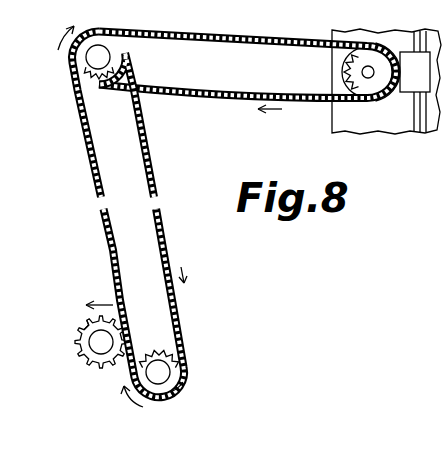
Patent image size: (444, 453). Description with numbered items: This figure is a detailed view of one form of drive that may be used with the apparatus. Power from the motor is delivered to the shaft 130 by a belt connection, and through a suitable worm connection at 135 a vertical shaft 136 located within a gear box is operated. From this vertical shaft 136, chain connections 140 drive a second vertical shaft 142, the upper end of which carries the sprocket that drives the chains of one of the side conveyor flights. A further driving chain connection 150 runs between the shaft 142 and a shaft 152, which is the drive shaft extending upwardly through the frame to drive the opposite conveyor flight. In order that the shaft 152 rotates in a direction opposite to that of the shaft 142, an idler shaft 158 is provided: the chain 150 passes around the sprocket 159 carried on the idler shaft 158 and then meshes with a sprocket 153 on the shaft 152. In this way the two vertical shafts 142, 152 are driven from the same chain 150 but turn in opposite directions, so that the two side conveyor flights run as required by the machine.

The shaft 130 is at (411, 38).
The worm connection 135 is at (404, 92).
The vertical shaft 136 is at (362, 72).
The chain connections 140 is at (262, 68).
The vertical shaft 142 is at (112, 57).
The driving chain connection 150 is at (78, 118).
The drive shaft 152 is at (90, 338).
The sprocket 153 is at (84, 326).
The idler shaft 158 is at (170, 372).
The sprocket 159 is at (186, 384).